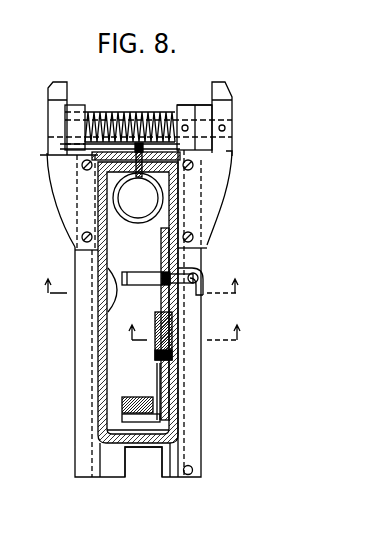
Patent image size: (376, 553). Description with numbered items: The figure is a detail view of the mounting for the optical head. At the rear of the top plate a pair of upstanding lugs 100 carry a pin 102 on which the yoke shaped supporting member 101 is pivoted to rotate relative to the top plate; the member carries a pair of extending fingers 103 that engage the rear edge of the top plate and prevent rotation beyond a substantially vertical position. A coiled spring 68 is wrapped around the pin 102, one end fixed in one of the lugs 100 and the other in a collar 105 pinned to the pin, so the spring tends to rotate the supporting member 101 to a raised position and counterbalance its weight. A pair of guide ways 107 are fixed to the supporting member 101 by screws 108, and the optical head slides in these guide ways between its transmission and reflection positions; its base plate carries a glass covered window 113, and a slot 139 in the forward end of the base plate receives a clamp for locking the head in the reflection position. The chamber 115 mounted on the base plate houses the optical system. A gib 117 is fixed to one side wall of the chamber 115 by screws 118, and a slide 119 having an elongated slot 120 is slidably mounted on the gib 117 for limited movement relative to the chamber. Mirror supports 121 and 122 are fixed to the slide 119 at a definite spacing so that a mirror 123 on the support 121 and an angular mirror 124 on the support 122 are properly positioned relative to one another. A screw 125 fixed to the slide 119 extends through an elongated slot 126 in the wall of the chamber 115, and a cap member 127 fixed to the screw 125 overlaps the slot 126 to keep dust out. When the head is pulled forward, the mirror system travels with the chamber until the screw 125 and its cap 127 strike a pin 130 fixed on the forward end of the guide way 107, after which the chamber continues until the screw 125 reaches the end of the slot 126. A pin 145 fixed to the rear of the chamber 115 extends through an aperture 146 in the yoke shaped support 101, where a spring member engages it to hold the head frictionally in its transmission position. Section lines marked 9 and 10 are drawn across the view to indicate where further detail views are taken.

The extending fingers 103 is at (53, 87).
The upstanding lugs 100 is at (78, 106).
The coiled spring 68 is at (125, 112).
The collar 105 is at (182, 105).
The pin 102 is at (60, 139).
The screws 108 is at (77, 162).
The yoke shaped supporting member 101 is at (65, 192).
The aperture 146 is at (231, 155).
The pin 145 is at (183, 176).
The glass covered window 113 is at (138, 198).
The mirror support 121 is at (76, 255).
The slide 119 is at (161, 240).
The elongated slot 126 is at (165, 258).
The screw 125 is at (195, 270).
The cap member 127 is at (205, 270).
The section line 9 is at (139, 301).
The section line 10 is at (185, 346).
The mirror 123 is at (98, 314).
The chamber 115 is at (98, 347).
The elongated slot 120 is at (160, 377).
The screws 118 is at (172, 355).
The gib 117 is at (178, 380).
The angular mirror 124 is at (122, 404).
The mirror support 122 is at (98, 420).
The guide ways 107 is at (78, 477).
The slot 139 is at (133, 470).
The pin 130 is at (190, 474).